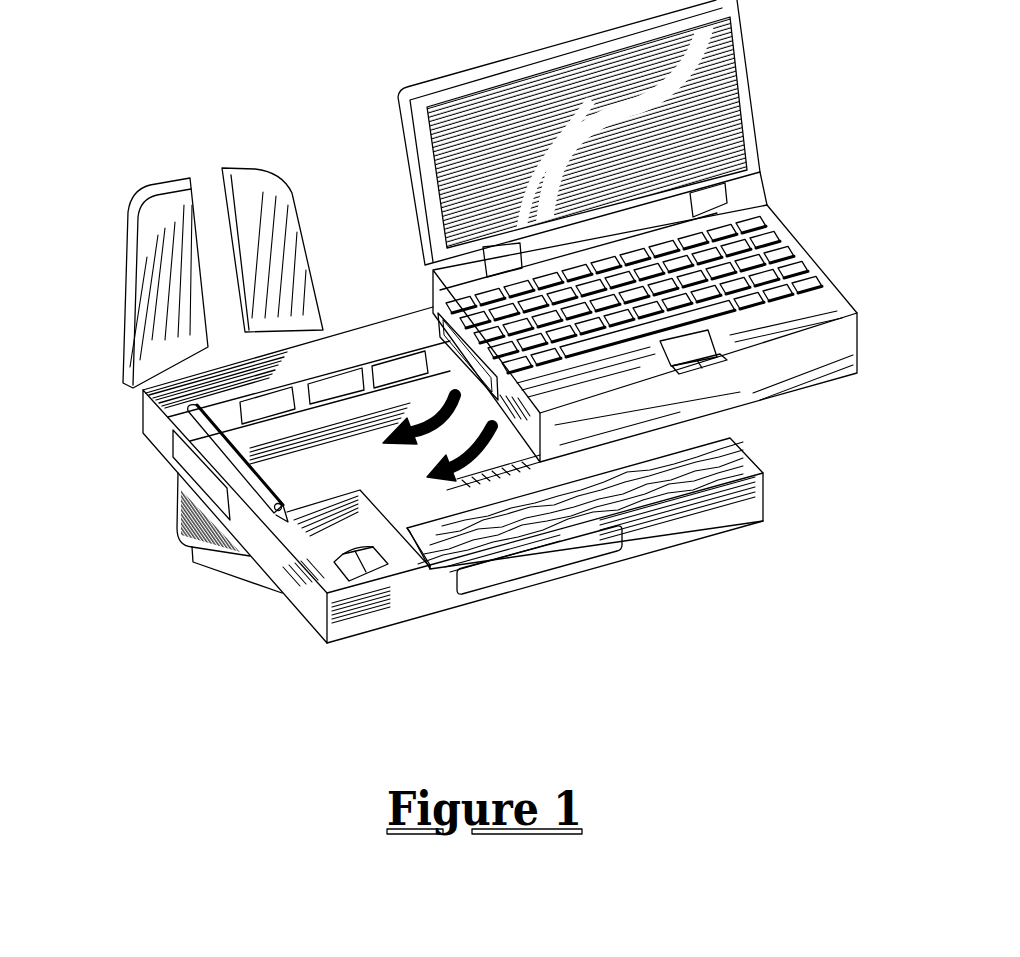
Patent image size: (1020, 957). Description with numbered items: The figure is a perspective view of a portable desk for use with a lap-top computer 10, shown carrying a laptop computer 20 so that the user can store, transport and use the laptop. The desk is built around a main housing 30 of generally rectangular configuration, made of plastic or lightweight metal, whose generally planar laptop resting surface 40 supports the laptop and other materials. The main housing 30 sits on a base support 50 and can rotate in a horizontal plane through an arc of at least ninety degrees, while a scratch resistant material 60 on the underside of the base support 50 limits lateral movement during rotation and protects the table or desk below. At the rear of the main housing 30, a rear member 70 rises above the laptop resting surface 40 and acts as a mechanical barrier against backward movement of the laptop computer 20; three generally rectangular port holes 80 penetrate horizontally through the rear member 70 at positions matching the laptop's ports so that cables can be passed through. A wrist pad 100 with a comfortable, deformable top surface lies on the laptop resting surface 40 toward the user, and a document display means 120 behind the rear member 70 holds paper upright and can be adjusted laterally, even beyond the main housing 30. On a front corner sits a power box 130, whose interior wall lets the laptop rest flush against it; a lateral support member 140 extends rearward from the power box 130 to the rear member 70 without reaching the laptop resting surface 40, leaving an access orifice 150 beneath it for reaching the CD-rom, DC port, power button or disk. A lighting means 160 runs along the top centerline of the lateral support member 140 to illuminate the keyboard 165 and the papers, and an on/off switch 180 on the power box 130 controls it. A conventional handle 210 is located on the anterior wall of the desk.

The portable desk for use with a lap-top computer 10 is at (268, 722).
The laptop computer 20 is at (662, 231).
The main housing 30 is at (435, 600).
The laptop resting surface 40 is at (420, 485).
The base support 50 is at (177, 543).
The scratch resistant material 60 is at (225, 552).
The rear member 70 is at (328, 340).
The port holes 80 is at (290, 403).
The wrist pad 100 is at (633, 493).
The document display means 120 is at (168, 205).
The power box 130 is at (312, 553).
The lateral support member 140 is at (187, 427).
The access orifice 150 is at (198, 473).
The lighting means 160 is at (275, 512).
The keyboard 165 is at (795, 245).
The on/off switch 180 is at (360, 575).
The handle 210 is at (565, 557).